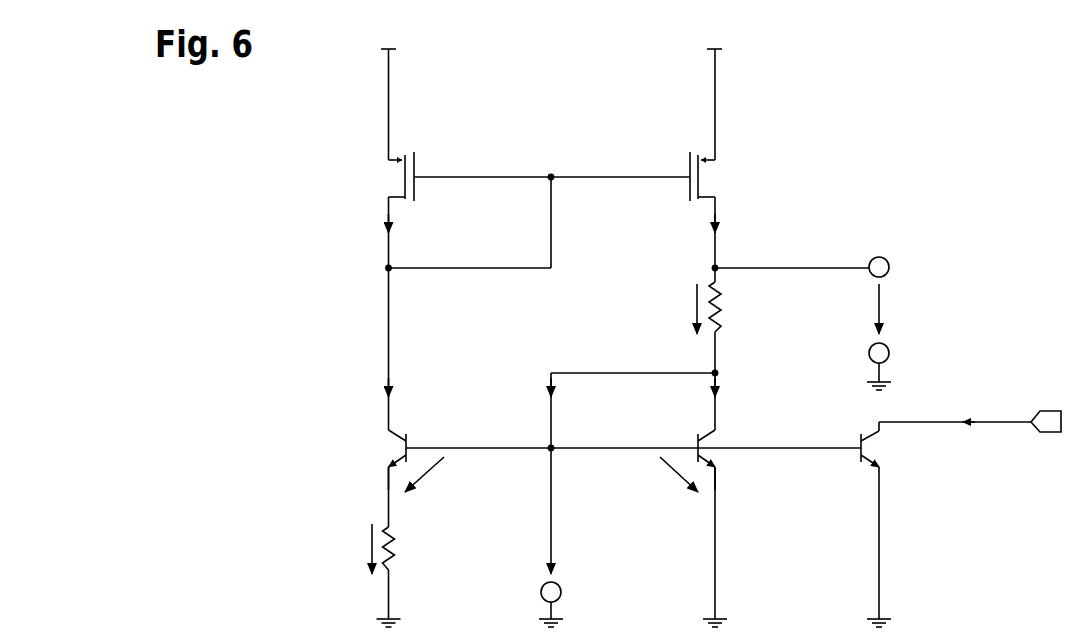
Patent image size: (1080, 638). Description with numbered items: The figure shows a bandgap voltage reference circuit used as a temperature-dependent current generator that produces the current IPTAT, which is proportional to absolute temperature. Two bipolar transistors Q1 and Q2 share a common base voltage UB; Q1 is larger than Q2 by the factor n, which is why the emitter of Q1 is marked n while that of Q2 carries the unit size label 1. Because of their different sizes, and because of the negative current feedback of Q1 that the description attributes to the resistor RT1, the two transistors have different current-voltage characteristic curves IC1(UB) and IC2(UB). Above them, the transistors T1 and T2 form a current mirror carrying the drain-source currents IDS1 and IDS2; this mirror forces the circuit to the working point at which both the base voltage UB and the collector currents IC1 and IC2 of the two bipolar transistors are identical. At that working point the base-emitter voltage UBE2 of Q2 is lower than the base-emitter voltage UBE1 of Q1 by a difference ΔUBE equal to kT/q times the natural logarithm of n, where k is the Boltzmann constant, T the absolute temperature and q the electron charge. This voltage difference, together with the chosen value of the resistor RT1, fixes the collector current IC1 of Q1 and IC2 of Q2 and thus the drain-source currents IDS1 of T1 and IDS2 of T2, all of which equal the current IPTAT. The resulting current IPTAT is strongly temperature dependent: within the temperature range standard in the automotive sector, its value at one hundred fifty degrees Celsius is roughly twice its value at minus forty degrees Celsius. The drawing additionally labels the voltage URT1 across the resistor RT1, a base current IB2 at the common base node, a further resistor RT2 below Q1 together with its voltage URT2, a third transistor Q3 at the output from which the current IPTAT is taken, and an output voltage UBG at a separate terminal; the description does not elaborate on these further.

The transistor T1 is at (389, 125).
The transistor T2 is at (718, 125).
The drain-source current of T1 IDS1 is at (416, 231).
The drain-source current of T2 IDS2 is at (742, 231).
The resistor RT1 is at (736, 307).
The voltage across RT1 URT1 is at (669, 309).
The bandgap output voltage UBG is at (896, 323).
The base current of Q2 IB2 is at (571, 410).
The collector current of Q1 IC1 is at (409, 396).
The collector current of Q2 IC2 is at (735, 396).
The bipolar transistor Q1 is at (381, 439).
The bipolar transistor Q2 is at (697, 439).
The third bipolar transistor Q3 is at (859, 439).
The temperature-proportional current IPTAT is at (970, 411).
The size ratio n is at (381, 478).
The unit size of Q2 1 is at (724, 477).
The base-emitter voltage of Q1 UBE1 is at (442, 477).
The base-emitter voltage of Q2 UBE2 is at (659, 477).
The second resistor RT2 is at (409, 548).
The voltage across RT2 URT2 is at (344, 549).
The base voltage UB is at (563, 537).